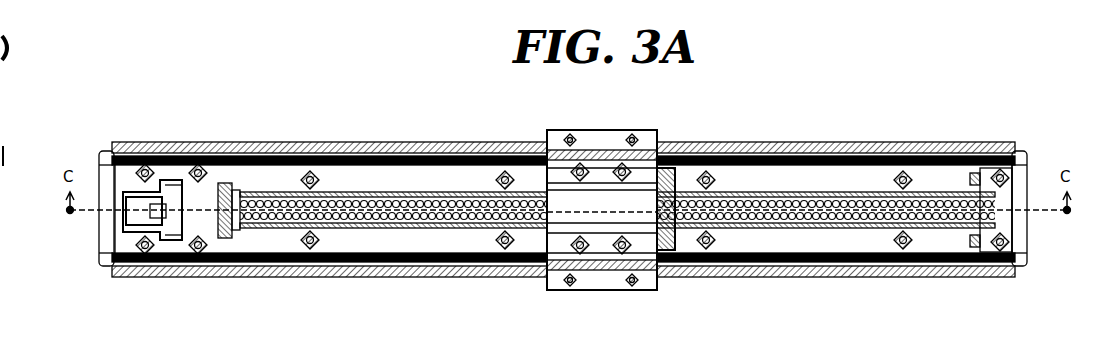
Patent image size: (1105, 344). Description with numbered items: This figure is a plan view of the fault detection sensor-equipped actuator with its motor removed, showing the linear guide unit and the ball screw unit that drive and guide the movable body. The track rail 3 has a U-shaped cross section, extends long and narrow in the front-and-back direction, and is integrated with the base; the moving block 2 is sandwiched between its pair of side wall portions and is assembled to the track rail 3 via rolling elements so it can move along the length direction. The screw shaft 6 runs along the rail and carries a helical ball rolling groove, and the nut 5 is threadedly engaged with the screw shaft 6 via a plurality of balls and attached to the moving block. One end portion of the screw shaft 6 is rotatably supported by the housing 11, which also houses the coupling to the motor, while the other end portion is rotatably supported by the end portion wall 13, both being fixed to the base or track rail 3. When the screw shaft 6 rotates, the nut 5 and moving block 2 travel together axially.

The moving block 2 is at (600, 195).
The track rail 3 is at (397, 176).
The nut 5 is at (665, 190).
The screw shaft 6 is at (460, 200).
The housing 11 is at (211, 193).
The end portion wall 13 is at (1023, 233).